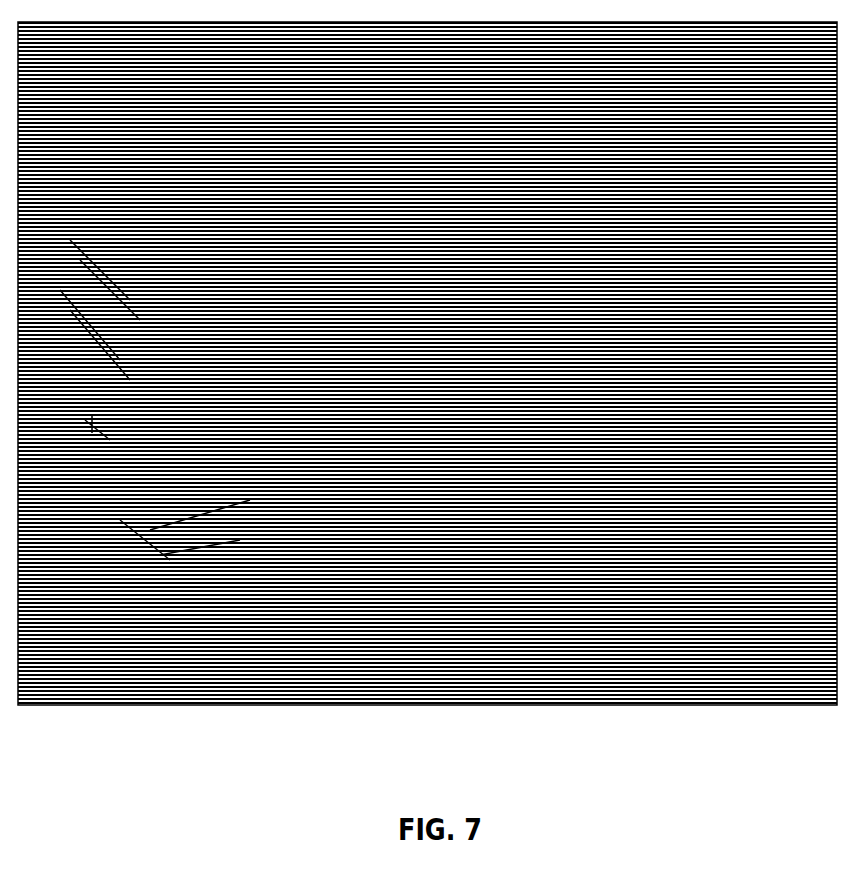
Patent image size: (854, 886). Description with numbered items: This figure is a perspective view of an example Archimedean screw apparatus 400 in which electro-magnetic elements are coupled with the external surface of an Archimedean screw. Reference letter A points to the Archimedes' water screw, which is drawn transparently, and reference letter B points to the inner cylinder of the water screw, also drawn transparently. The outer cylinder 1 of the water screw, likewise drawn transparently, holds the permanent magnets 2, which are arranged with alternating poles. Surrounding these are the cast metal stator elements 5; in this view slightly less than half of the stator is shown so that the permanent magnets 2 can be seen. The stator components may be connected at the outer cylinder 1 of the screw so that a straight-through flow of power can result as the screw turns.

The Archimedean screw apparatus 400 is at (232, 85).
The Archimedes' water screw A is at (100, 355).
The inner cylinder B is at (90, 350).
The outer cylinder 1 is at (92, 433).
The permanent magnets 2 is at (153, 550).
The cast metal stator elements 5 is at (237, 507).